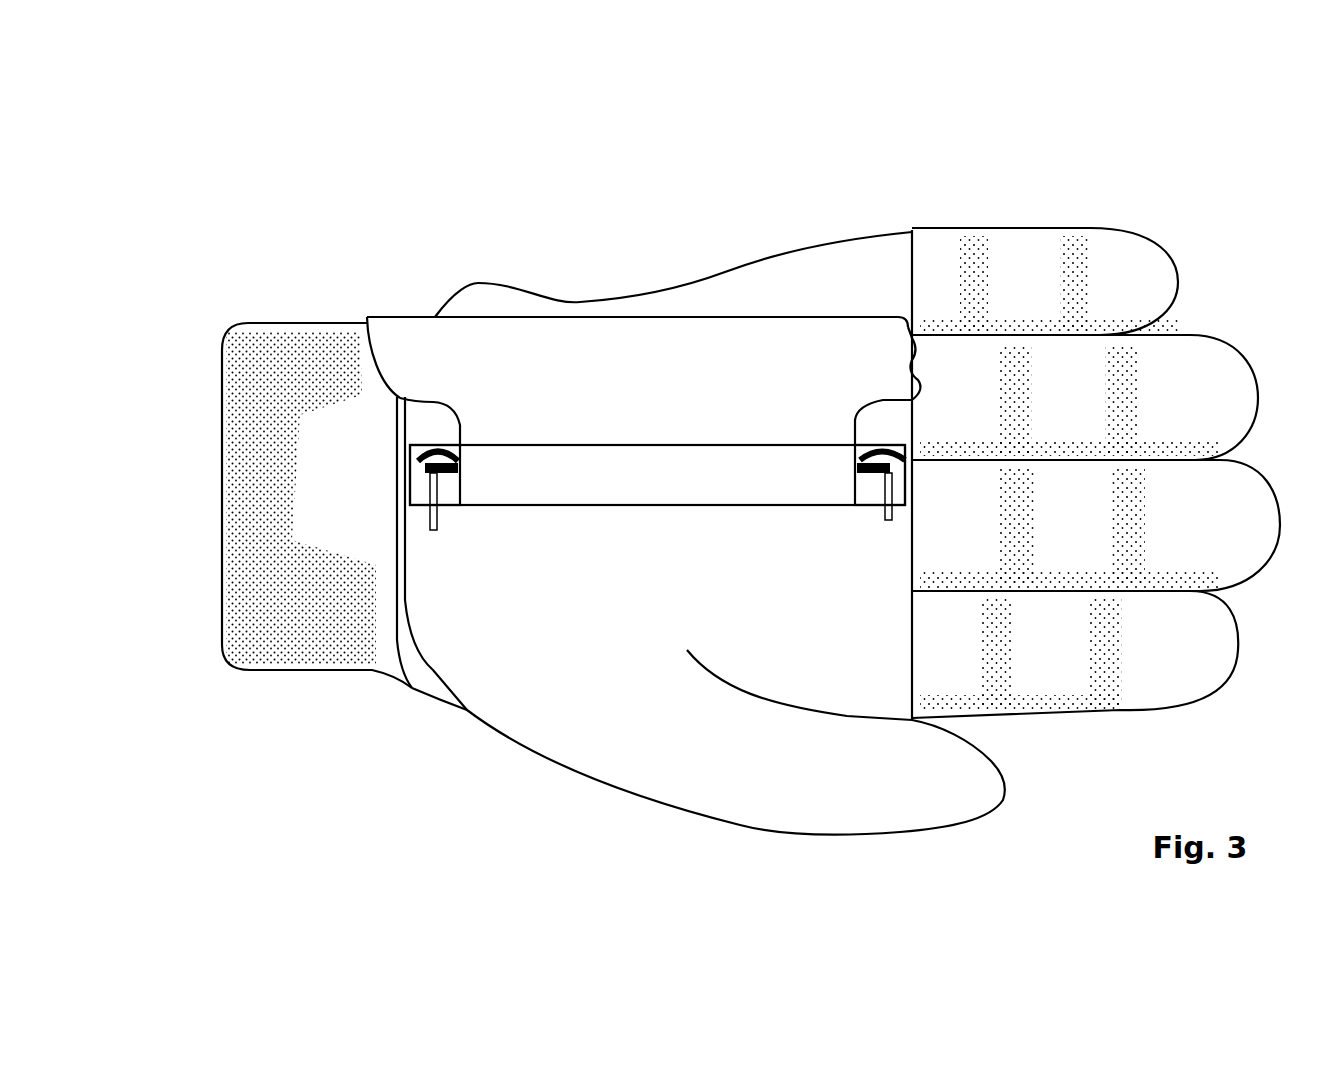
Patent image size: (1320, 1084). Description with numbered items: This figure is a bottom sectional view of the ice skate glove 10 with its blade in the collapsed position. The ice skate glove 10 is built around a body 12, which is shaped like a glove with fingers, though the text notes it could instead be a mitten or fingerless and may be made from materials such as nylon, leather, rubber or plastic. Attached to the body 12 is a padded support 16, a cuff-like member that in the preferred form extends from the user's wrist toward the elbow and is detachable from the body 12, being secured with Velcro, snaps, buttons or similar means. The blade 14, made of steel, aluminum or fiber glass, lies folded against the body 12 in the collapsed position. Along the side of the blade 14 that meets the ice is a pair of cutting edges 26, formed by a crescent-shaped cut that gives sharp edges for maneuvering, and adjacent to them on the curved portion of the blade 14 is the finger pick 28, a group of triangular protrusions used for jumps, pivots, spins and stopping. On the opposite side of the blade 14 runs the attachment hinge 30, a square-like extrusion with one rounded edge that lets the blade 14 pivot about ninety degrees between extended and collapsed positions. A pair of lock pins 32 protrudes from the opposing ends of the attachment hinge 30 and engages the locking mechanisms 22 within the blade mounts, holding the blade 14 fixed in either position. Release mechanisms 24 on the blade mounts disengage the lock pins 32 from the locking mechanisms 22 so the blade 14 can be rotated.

The ice skate glove 10 is at (220, 193).
The body 12 is at (1077, 178).
The blade 14 is at (728, 334).
The padded support 16 is at (323, 458).
The locking mechanism 22 is at (436, 433).
The release mechanism 24 is at (435, 549).
The pair of cutting edges 26 is at (415, 303).
The finger pick 28 is at (934, 362).
The attachment hinge 30 is at (810, 484).
The pair of lock pins 32 is at (463, 489).